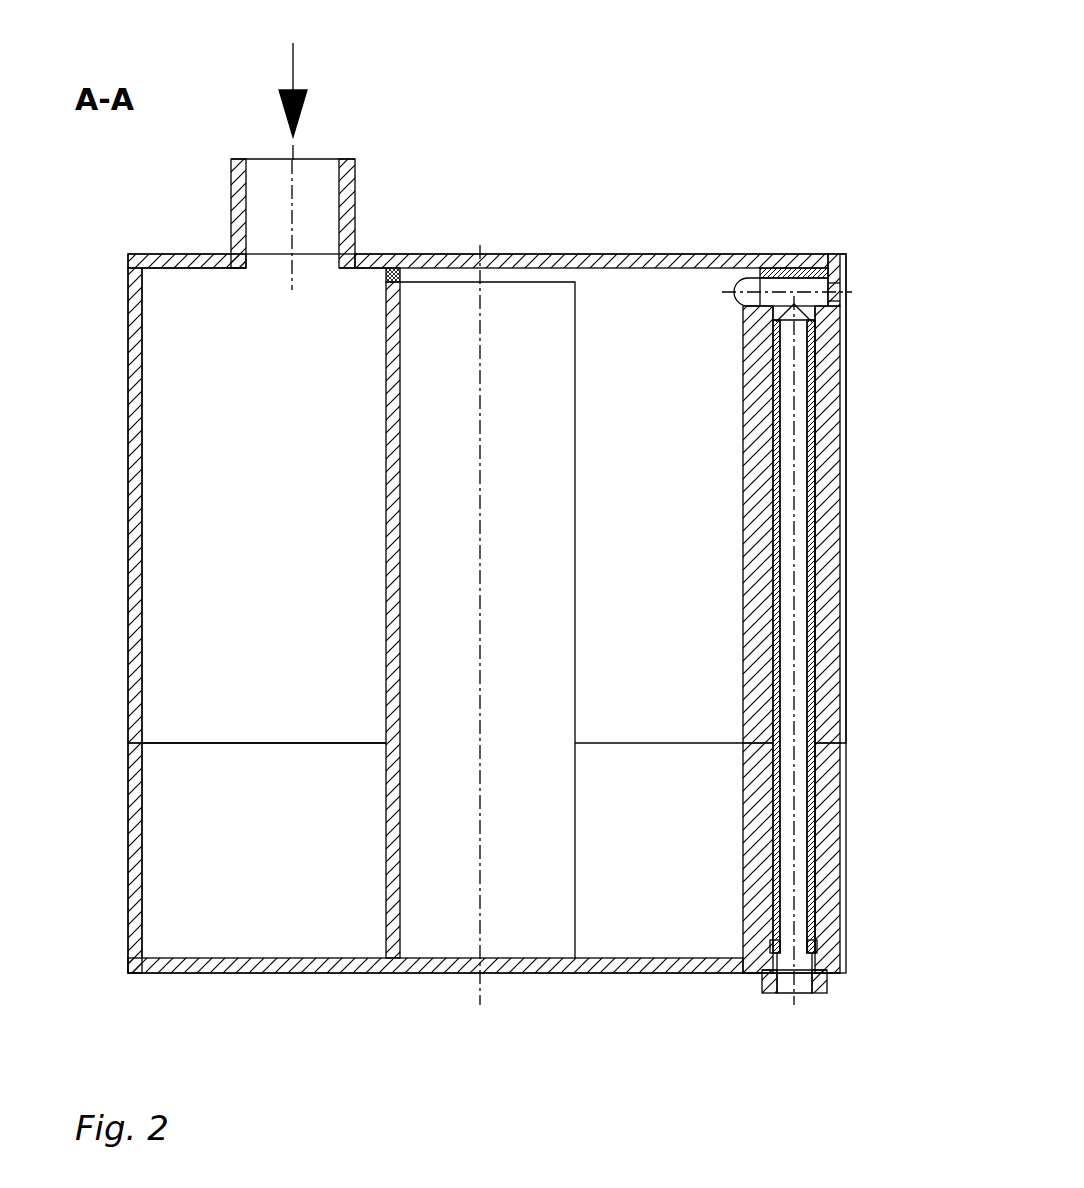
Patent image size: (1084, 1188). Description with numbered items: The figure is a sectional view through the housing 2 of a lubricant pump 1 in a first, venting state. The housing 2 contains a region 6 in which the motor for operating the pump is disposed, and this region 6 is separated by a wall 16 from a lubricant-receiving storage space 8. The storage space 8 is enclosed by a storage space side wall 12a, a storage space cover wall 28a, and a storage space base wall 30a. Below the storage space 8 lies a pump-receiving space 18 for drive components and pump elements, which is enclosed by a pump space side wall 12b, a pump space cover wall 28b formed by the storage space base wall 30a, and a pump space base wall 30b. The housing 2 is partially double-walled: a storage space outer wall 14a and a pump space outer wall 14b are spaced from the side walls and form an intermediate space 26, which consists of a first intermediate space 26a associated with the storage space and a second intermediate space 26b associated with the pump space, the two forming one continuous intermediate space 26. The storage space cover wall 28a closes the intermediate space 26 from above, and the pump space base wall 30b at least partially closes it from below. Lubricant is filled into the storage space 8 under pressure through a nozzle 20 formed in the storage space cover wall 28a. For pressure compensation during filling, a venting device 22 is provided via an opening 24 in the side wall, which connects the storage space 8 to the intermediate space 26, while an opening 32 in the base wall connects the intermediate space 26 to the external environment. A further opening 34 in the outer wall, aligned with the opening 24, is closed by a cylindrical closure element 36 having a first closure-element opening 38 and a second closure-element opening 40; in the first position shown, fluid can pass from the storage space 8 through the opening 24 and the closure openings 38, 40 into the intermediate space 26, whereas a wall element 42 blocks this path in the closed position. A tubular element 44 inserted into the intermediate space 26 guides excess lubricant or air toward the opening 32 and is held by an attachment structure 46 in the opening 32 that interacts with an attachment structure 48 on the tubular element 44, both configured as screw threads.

The lubricant pump 1 is at (560, 40).
The housing 2 is at (418, 250).
The region 6 is at (458, 503).
The storage space 8 is at (265, 418).
The storage space side wall 12a is at (132, 540).
The pump space side wall 12b is at (130, 838).
The storage space outer wall 14a is at (840, 440).
The pump space outer wall 14b is at (840, 828).
The wall 16 is at (386, 538).
The pump-receiving space 18 is at (250, 873).
The nozzle 20 is at (231, 205).
The venting device 22 is at (858, 240).
The opening 24 is at (745, 282).
The intermediate space 26 is at (788, 320).
The first intermediate space 26a is at (793, 548).
The second intermediate space 26b is at (788, 845).
The storage space cover wall 28a is at (540, 254).
The pump space cover wall 28b is at (343, 745).
The storage space base wall 30a is at (225, 742).
The pump space base wall 30b is at (515, 973).
The opening 32 is at (762, 975).
The further opening 34 is at (832, 268).
The closure element 36 is at (840, 292).
The first closure-element opening 38 is at (770, 272).
The second closure-element opening 40 is at (815, 312).
The wall element 42 is at (795, 278).
The tubular element 44 is at (812, 592).
The attachment structure 46 is at (822, 945).
The attachment structure 48 is at (822, 990).